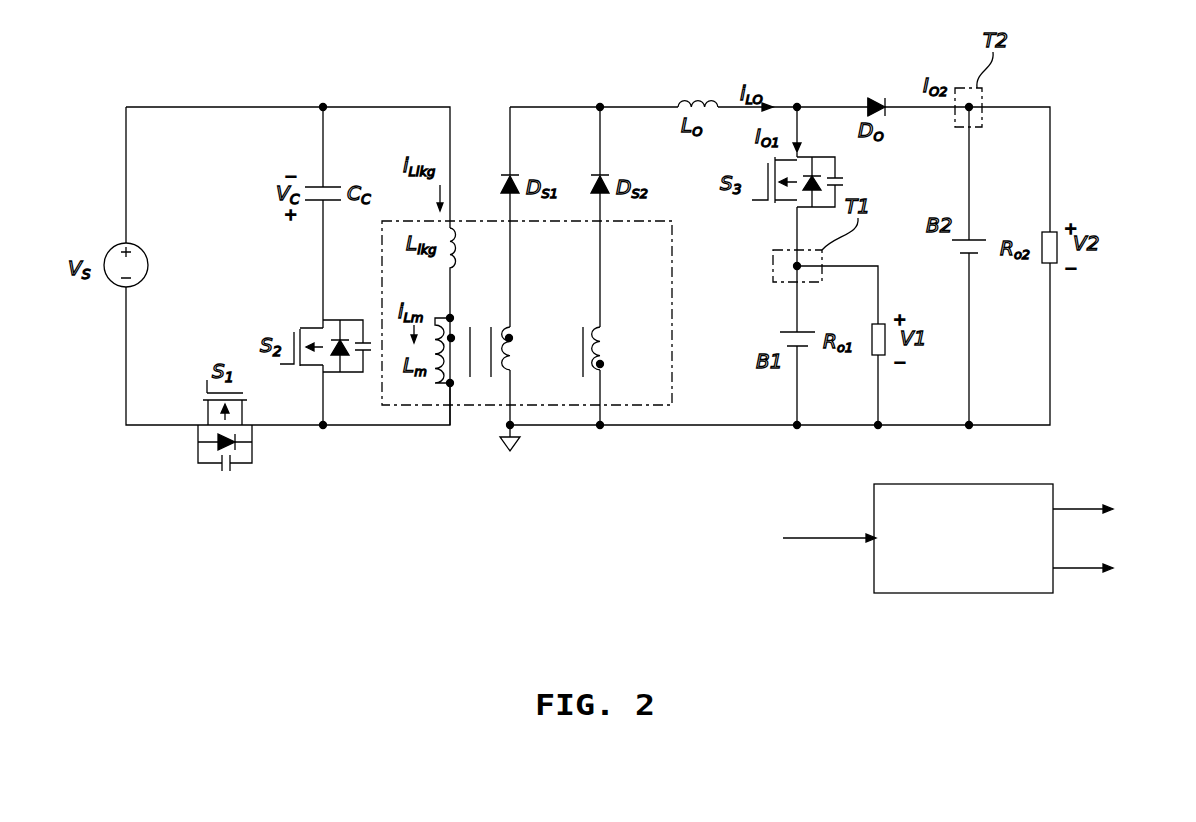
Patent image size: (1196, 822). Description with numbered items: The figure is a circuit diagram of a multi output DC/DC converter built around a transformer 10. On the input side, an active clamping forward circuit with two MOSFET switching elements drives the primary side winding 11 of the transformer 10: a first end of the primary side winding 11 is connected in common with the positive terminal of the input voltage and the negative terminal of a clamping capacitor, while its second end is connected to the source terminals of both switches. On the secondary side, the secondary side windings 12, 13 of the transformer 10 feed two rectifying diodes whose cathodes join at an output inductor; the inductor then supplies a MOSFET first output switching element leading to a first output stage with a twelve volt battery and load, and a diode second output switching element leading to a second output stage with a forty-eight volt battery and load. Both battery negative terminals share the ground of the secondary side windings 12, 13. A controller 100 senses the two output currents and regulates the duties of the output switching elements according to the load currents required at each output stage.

The transformer 10 is at (527, 363).
The primary side winding 11 is at (457, 388).
The secondary side winding 12 is at (516, 352).
The secondary side winding 13 is at (606, 352).
The controller 100 is at (972, 593).